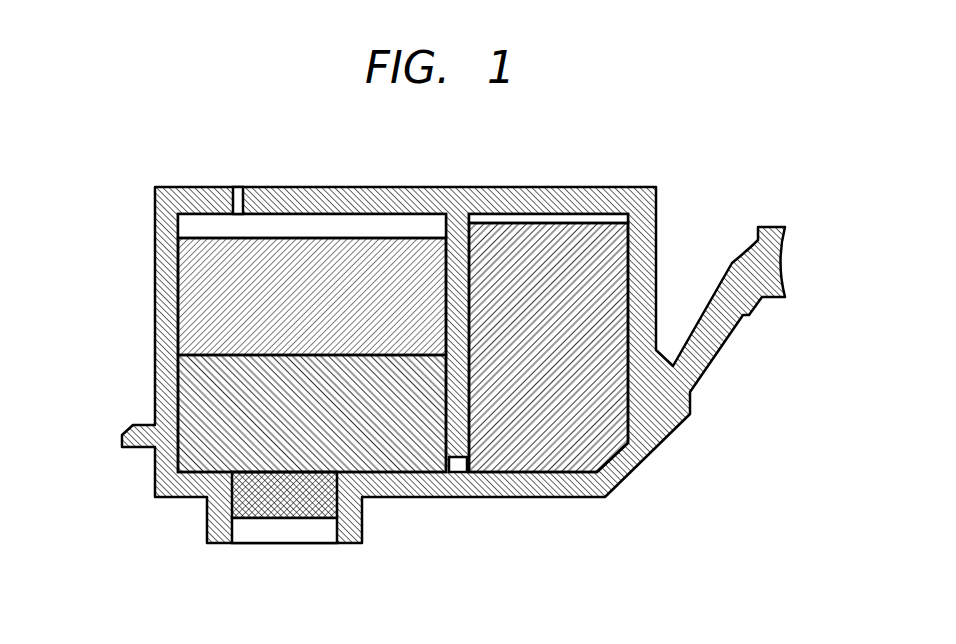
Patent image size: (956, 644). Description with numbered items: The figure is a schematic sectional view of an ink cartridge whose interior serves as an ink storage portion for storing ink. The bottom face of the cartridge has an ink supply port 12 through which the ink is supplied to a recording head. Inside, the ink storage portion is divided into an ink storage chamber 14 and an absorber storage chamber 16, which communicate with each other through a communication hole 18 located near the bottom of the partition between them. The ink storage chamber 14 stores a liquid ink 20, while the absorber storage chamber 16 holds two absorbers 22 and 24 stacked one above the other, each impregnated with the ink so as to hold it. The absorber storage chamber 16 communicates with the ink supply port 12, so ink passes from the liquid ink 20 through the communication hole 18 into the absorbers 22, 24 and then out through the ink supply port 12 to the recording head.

The ink supply port 12 is at (288, 532).
The ink storage chamber 14 is at (595, 218).
The absorber storage chamber 16 is at (297, 230).
The communication hole 18 is at (465, 497).
The liquid ink 20 is at (565, 438).
The absorber 22 is at (197, 403).
The absorber 24 is at (225, 295).